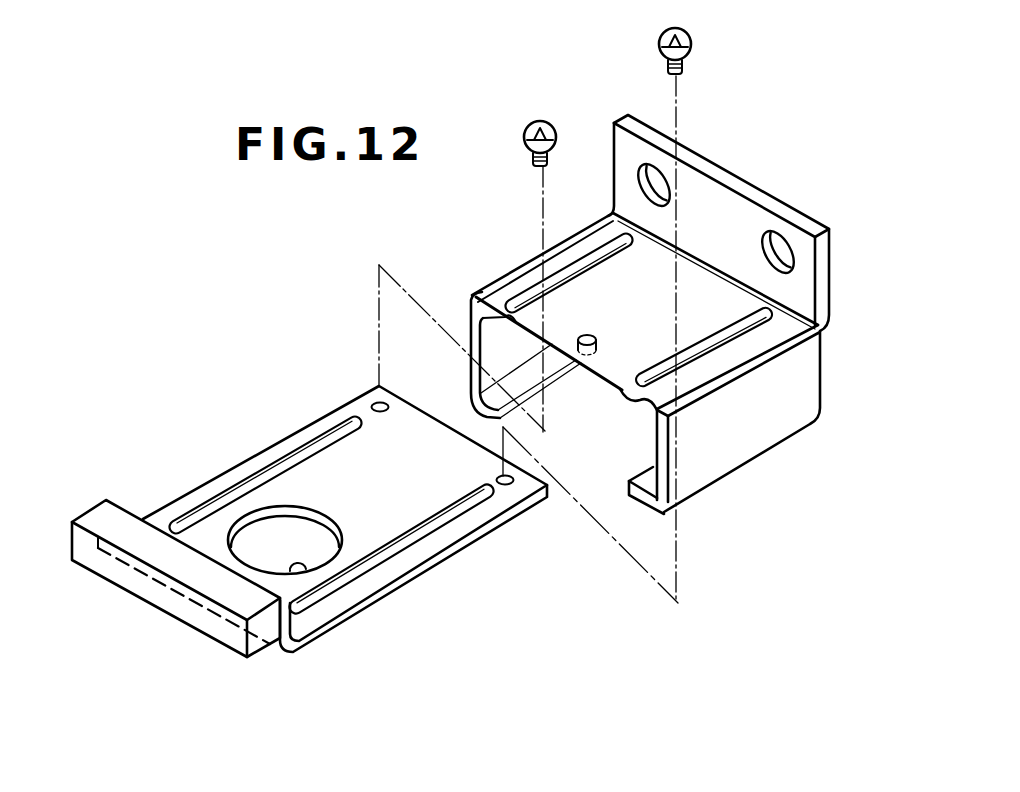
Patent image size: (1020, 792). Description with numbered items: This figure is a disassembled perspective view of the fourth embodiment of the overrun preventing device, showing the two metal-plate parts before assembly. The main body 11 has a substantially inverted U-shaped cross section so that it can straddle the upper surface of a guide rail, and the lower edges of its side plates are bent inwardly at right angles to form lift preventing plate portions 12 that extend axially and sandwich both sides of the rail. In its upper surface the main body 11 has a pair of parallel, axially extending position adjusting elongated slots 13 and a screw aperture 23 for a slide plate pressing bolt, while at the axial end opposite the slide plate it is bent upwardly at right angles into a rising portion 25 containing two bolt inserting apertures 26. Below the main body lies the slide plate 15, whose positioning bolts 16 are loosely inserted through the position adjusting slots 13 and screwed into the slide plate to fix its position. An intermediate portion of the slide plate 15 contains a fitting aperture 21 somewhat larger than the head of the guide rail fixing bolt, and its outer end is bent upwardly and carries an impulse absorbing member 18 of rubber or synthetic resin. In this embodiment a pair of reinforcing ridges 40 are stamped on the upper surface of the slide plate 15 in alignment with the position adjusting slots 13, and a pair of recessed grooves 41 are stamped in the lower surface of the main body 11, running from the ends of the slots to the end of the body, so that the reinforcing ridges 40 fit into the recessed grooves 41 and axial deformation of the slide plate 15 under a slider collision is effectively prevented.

The main body 11 is at (840, 345).
The lift preventing plate portion 12 is at (648, 479).
The position adjusting elongated slot 13 is at (710, 347).
The slide plate 15 is at (453, 558).
The positioning bolt 16 is at (549, 123).
The impulse absorbing member 18 is at (95, 514).
The fitting aperture 21 is at (303, 570).
The screw aperture 23 is at (578, 335).
The rising portion 25 is at (712, 193).
The bolt inserting aperture 26 is at (785, 246).
The reinforcing ridge 40 is at (398, 540).
The recessed groove 41 is at (626, 400).